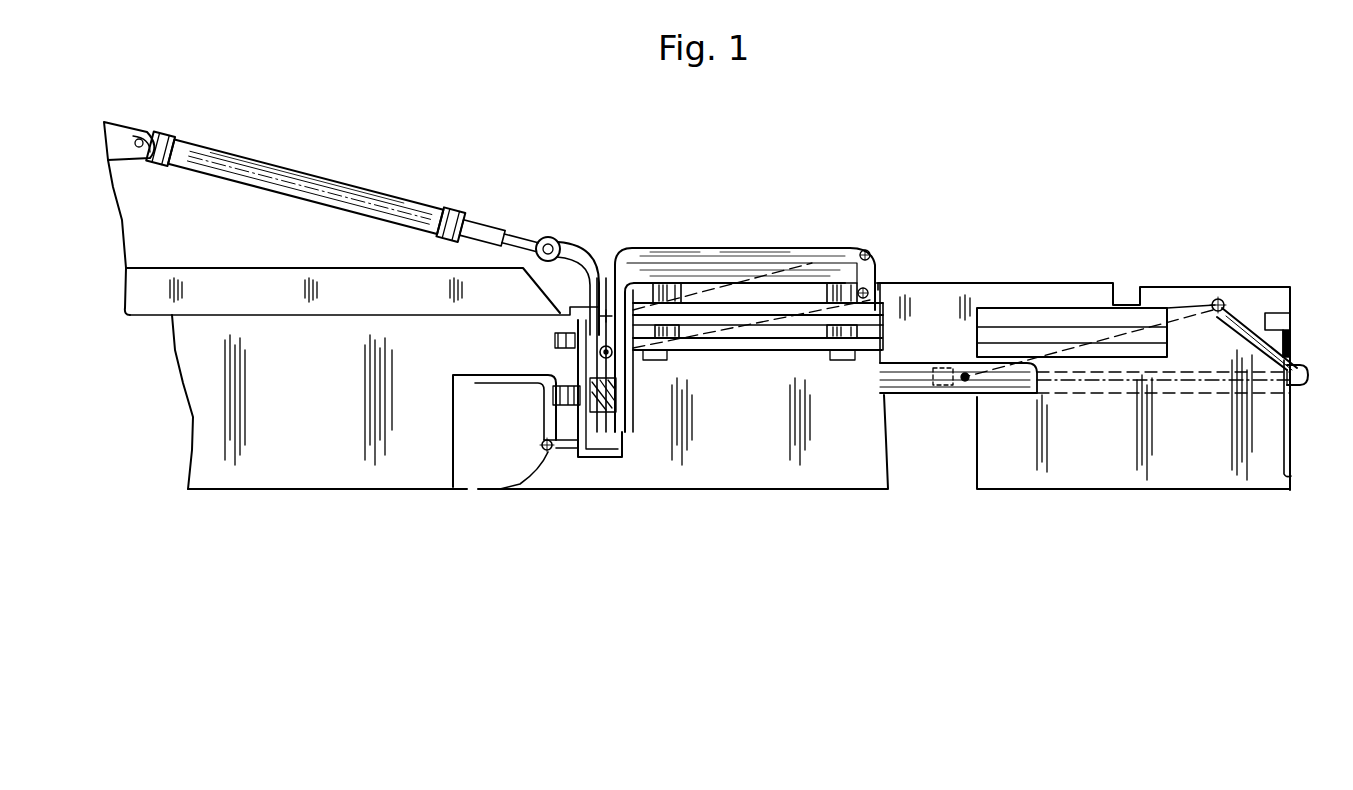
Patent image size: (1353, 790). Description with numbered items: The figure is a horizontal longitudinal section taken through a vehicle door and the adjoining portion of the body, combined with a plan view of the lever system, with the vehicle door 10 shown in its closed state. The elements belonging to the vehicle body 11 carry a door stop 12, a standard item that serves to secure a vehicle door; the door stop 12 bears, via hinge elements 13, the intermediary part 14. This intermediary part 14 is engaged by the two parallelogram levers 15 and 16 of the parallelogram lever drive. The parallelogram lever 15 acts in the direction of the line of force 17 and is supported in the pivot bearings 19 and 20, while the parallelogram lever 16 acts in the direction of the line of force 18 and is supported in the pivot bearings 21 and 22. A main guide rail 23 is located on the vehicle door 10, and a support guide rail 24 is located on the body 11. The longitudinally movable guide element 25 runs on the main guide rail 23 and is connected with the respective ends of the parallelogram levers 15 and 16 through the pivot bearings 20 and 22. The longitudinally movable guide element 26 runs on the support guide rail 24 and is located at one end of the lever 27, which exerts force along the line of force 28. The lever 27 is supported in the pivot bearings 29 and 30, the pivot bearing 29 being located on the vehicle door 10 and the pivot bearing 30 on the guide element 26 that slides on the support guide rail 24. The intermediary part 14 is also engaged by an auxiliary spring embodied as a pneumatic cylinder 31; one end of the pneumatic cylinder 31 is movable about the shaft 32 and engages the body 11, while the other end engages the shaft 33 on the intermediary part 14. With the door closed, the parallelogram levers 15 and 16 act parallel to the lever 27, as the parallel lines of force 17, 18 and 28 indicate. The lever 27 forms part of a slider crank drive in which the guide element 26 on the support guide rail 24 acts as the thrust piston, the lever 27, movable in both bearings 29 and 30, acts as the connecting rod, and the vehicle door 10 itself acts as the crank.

The vehicle door 10 is at (740, 455).
The vehicle body 11 is at (118, 132).
The door stop 12 is at (450, 483).
The hinge elements 13 is at (545, 448).
The intermediary part 14 is at (618, 405).
The parallelogram lever 15 is at (698, 283).
The parallelogram lever 16 is at (725, 283).
The line of force 17 is at (757, 320).
The line of force 18 is at (812, 283).
The pivot bearing 19 is at (610, 300).
The pivot bearing 20 is at (868, 258).
The pivot bearing 21 is at (610, 358).
The pivot bearing 22 is at (920, 285).
The main guide rail 23 is at (690, 283).
The support guide rail 24 is at (898, 400).
The guide element 25 is at (690, 350).
The guide element 26 is at (932, 398).
The lever 27 is at (1030, 395).
The line of force 28 is at (1050, 350).
The pivot bearing 29 is at (1222, 298).
The pivot bearing 30 is at (997, 320).
The pneumatic cylinder 31 is at (268, 170).
The shaft 32 is at (140, 145).
The shaft 33 is at (548, 237).